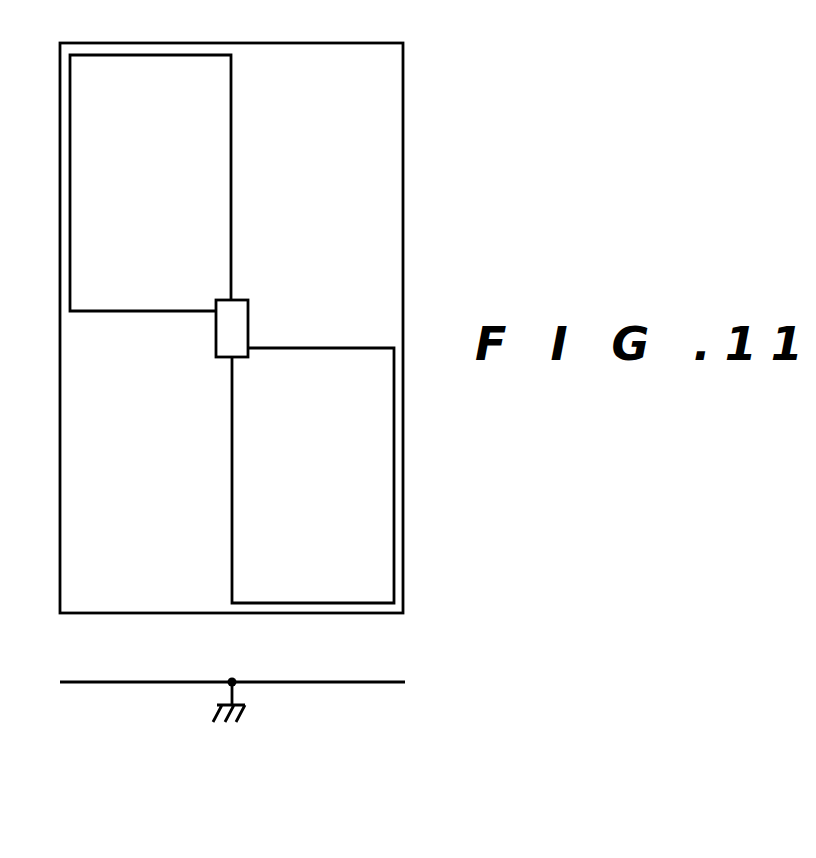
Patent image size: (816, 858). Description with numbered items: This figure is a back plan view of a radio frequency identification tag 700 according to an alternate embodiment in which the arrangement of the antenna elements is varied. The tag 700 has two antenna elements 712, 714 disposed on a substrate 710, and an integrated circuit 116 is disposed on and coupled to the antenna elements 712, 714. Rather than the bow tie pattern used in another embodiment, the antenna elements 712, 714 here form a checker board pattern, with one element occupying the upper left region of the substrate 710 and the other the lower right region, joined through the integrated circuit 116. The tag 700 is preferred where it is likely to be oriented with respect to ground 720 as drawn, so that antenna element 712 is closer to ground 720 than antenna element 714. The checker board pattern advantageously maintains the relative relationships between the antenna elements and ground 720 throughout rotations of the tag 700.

The tag 700 is at (413, 527).
The substrate 710 is at (388, 82).
The antenna element 712 is at (315, 592).
The antenna element 714 is at (146, 68).
The integrated circuit 116 is at (236, 318).
The ground 720 is at (395, 681).